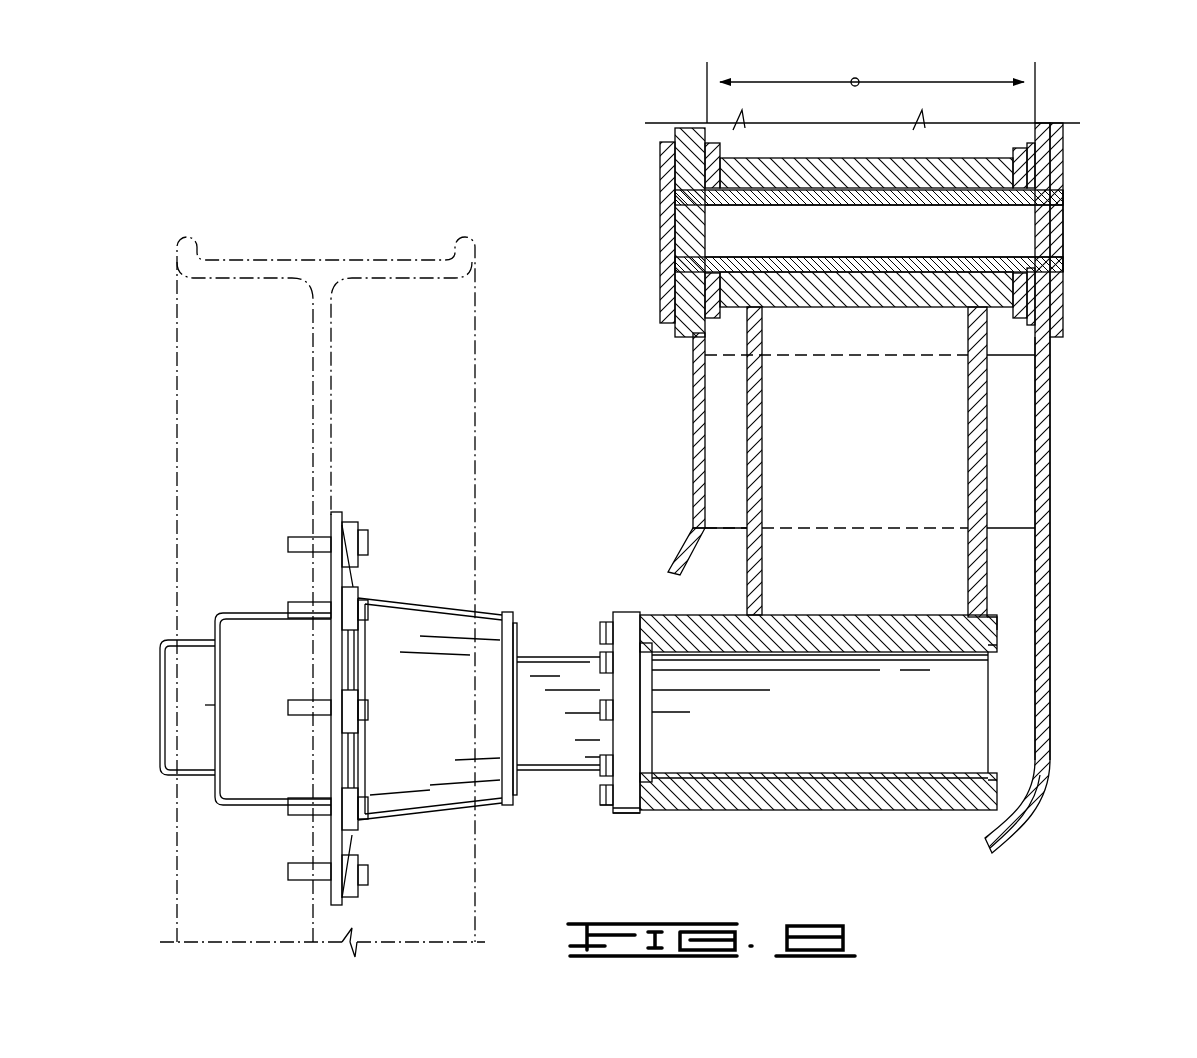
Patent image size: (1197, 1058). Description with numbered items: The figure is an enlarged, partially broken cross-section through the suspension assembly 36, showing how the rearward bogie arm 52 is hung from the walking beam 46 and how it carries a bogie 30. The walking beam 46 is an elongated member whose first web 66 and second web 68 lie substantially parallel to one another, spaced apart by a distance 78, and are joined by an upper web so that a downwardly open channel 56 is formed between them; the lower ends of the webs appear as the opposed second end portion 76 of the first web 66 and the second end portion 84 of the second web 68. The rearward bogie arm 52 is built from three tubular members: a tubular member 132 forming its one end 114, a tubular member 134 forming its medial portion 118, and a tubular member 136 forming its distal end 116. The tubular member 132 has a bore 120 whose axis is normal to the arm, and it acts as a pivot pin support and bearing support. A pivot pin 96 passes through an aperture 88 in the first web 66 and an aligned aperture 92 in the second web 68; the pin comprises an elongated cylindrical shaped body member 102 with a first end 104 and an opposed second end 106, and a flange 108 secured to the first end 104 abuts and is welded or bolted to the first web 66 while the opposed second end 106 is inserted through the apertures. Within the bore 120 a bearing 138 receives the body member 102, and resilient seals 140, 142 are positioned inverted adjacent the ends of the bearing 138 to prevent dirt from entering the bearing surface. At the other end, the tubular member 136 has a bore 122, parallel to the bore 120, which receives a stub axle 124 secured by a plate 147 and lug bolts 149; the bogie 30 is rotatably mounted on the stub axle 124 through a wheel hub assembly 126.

The bogie 30 is at (225, 370).
The suspension assembly 36 is at (1082, 450).
The walking beam 46 is at (1053, 706).
The rearward bogie arm 52 is at (992, 445).
The downwardly open channel 56 is at (720, 432).
The first web 66 is at (693, 370).
The second web 68 is at (1050, 500).
The opposed second end portion 76 is at (672, 560).
The distance 78 is at (857, 78).
The second end portion 84 is at (1025, 830).
The aperture 88 is at (690, 258).
The aperture 92 is at (1063, 275).
The pivot pin 96 is at (659, 165).
The elongated cylindrical shaped body member 102 is at (803, 248).
The first end 104 is at (676, 212).
The opposed second end 106 is at (1063, 250).
The flange 108 is at (668, 287).
The one end 114 is at (1063, 150).
The distal end 116 is at (880, 793).
The medial portion 118 is at (990, 372).
The bore 120 is at (890, 268).
The bore 122 is at (822, 770).
The stub axle 124 is at (568, 652).
The wheel hub assembly 126 is at (262, 608).
The tubular member 132 is at (995, 176).
The tubular member 134 is at (986, 493).
The tubular member 136 is at (740, 812).
The bearing 138 is at (918, 194).
The resilient seal 140 is at (1063, 260).
The resilient seal 142 is at (728, 268).
The plate 147 is at (624, 818).
The lug bolts 149 is at (598, 802).